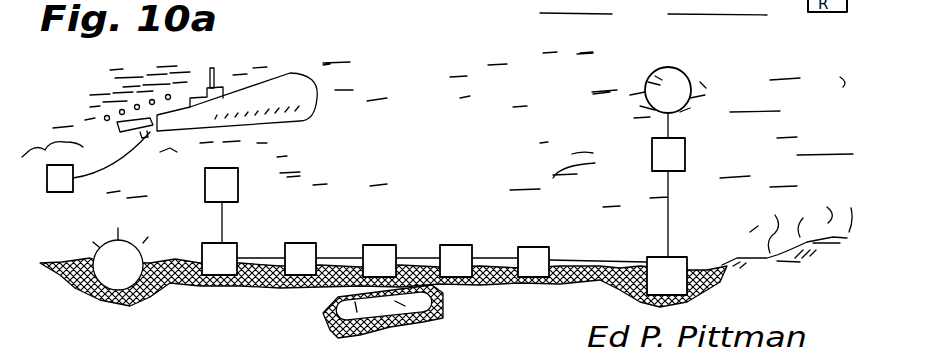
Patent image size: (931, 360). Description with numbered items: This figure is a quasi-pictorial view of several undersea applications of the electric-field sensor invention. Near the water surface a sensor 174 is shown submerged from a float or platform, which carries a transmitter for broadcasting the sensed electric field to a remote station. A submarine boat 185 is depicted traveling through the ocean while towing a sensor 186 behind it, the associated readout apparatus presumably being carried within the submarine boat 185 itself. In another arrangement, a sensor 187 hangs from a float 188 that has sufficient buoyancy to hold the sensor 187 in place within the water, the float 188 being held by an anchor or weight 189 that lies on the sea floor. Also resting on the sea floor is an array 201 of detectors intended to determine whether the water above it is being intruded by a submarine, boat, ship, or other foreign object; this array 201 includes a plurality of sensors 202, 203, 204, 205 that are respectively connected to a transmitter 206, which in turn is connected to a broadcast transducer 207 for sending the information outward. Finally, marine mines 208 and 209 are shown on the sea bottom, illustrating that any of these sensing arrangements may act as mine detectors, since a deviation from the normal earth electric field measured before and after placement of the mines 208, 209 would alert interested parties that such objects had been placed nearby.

The sensor 174 is at (422, 1).
The submarine boat 185 is at (302, 75).
The sensor 186 is at (50, 192).
The sensor 187 is at (686, 152).
The float 188 is at (684, 72).
The anchor or weight 189 is at (680, 257).
The array 201 is at (433, 214).
The sensor 202 is at (545, 251).
The sensor 203 is at (468, 245).
The sensor 204 is at (404, 229).
The sensor 205 is at (312, 243).
The transmitter 206 is at (238, 244).
The broadcast transducer 207 is at (205, 186).
The marine mine 208 is at (147, 248).
The marine mine 209 is at (386, 334).